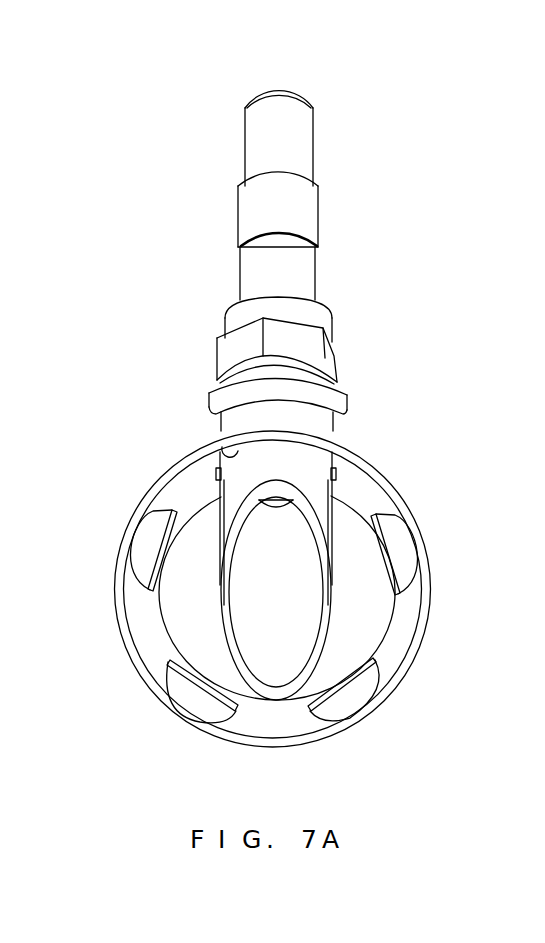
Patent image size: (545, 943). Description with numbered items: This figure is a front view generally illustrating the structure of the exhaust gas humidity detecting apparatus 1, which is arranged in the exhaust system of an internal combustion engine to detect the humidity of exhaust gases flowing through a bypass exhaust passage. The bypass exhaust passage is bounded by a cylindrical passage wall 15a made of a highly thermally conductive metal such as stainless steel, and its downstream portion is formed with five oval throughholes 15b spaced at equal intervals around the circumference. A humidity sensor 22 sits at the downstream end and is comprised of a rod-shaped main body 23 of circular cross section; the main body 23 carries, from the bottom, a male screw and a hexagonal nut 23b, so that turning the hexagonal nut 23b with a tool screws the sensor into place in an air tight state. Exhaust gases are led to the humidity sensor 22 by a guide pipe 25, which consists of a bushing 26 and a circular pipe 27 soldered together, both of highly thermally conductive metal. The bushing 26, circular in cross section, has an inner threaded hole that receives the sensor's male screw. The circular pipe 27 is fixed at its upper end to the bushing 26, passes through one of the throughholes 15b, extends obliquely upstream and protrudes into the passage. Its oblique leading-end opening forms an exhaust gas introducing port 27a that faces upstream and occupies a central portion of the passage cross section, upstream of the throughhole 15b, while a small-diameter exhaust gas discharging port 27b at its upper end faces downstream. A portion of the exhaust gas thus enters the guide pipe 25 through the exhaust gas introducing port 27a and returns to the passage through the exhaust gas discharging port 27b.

The exhaust gas humidity detecting apparatus 1 is at (269, 398).
The humidity sensor 22 is at (185, 104).
The main body 23 is at (318, 163).
The hexagonal nut 23b is at (332, 358).
The guide pipe 25 is at (275, 538).
The bushing 26 is at (347, 398).
The circular pipe 27 is at (253, 566).
The exhaust gas introducing port 27a is at (272, 576).
The exhaust gas discharging port 27b is at (267, 498).
The passage wall 15a is at (116, 597).
The oval throughholes 15b is at (223, 449).